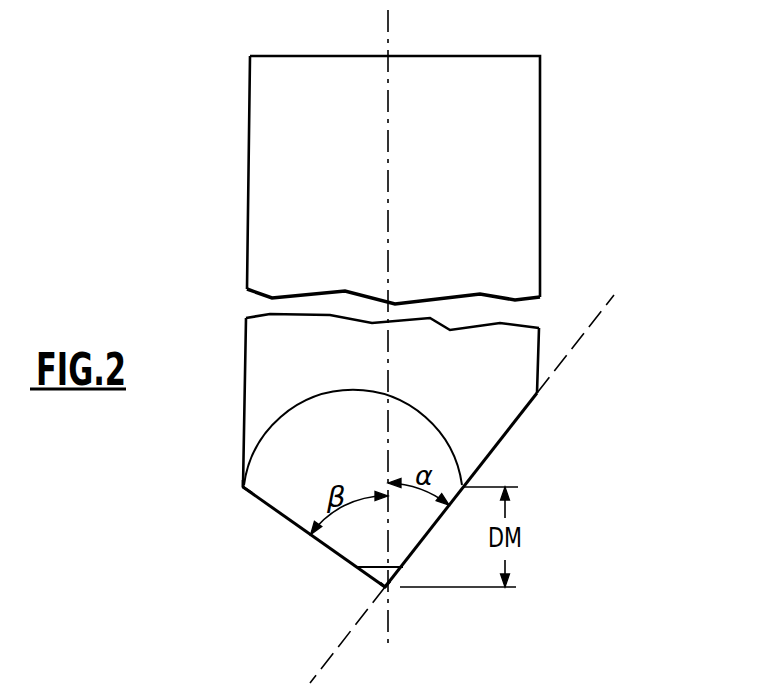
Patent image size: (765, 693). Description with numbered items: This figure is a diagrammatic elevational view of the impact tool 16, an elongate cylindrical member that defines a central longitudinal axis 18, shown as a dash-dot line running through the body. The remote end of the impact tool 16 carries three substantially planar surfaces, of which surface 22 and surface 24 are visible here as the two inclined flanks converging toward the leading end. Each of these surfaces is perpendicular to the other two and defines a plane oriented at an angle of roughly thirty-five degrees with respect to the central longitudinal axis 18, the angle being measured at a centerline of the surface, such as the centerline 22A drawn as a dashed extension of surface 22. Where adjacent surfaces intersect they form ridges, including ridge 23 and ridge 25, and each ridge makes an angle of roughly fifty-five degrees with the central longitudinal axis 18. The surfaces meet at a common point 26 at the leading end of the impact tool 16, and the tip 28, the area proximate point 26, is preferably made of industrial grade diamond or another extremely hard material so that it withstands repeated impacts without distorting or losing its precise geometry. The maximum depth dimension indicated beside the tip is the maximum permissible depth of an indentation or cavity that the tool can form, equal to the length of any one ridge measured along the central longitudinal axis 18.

The impact tool 16 is at (541, 190).
The central longitudinal axis 18 is at (400, 34).
The planar surface 22 is at (525, 410).
The centerline of surface 22A is at (598, 310).
The ridge 23 is at (498, 443).
The planar surface 24 is at (283, 502).
The ridge 25 is at (243, 488).
The common point 26 is at (381, 589).
The tip 28 is at (379, 581).